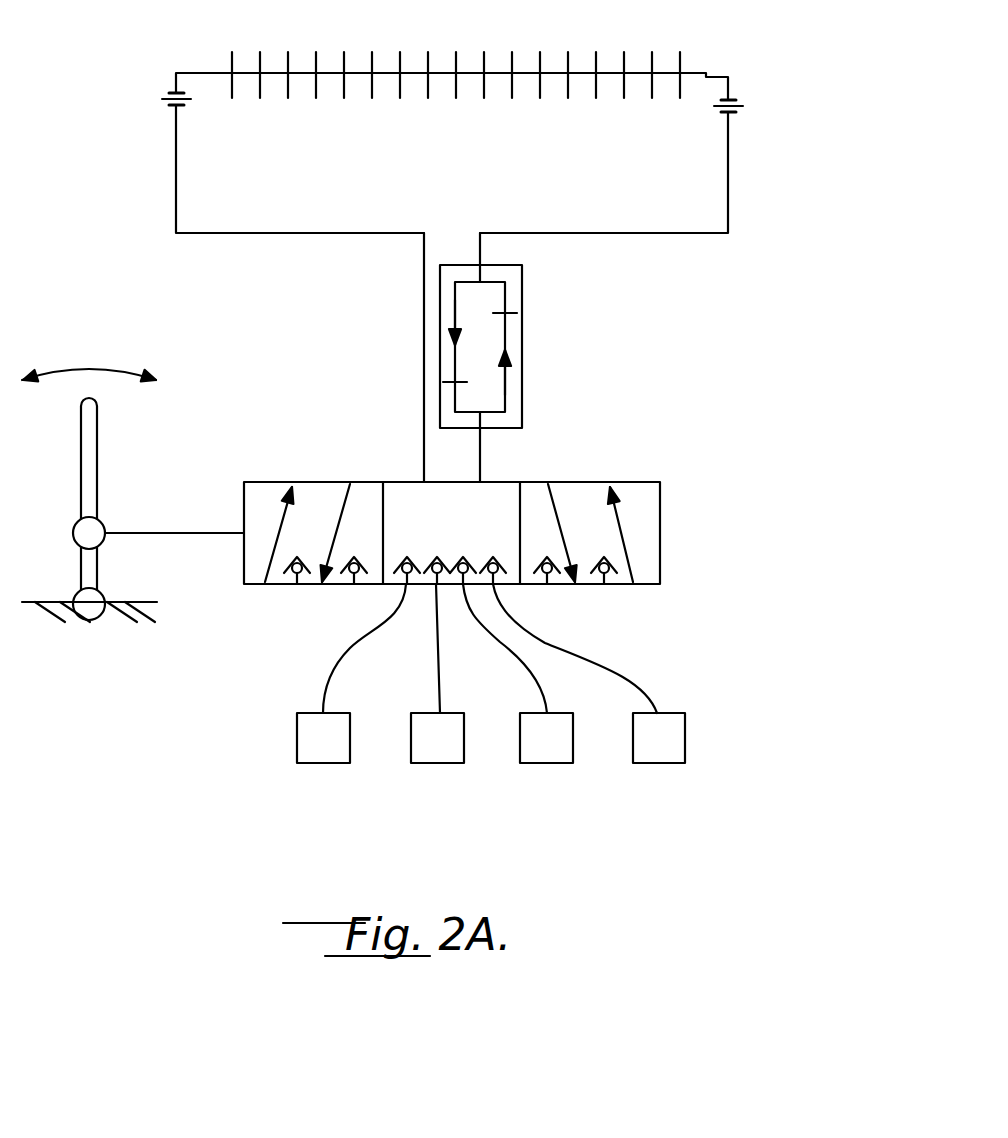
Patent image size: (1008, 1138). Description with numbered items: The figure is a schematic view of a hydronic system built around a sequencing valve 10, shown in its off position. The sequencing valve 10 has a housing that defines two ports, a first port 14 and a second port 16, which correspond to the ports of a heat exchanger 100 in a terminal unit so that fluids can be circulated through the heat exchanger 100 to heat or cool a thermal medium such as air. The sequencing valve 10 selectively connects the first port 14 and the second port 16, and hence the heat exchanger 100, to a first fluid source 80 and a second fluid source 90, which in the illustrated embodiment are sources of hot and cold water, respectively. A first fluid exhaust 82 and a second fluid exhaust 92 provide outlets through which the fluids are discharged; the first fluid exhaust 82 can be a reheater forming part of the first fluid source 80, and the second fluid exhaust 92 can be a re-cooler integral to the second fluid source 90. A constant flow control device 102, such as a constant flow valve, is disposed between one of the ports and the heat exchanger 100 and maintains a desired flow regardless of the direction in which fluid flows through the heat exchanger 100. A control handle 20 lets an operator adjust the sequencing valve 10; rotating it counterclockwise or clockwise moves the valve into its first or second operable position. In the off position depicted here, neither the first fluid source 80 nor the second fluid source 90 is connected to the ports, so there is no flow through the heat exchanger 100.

The heat exchanger 100 is at (708, 72).
The constant flow control device 102 is at (522, 327).
The second port 16 is at (424, 460).
The first port 14 is at (480, 462).
The sequencing valve 10 is at (667, 518).
The control handle 20 is at (97, 457).
The second fluid source 90 is at (297, 740).
The first fluid exhaust 82 is at (432, 763).
The second fluid exhaust 92 is at (540, 755).
The first fluid source 80 is at (668, 748).